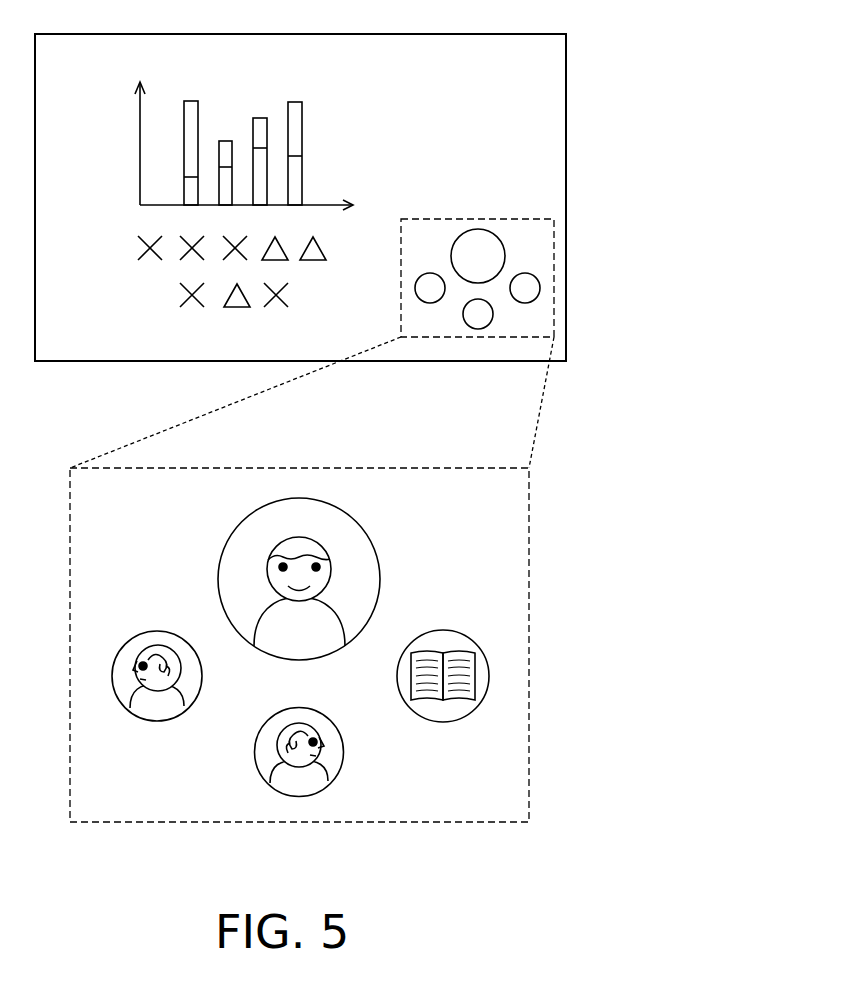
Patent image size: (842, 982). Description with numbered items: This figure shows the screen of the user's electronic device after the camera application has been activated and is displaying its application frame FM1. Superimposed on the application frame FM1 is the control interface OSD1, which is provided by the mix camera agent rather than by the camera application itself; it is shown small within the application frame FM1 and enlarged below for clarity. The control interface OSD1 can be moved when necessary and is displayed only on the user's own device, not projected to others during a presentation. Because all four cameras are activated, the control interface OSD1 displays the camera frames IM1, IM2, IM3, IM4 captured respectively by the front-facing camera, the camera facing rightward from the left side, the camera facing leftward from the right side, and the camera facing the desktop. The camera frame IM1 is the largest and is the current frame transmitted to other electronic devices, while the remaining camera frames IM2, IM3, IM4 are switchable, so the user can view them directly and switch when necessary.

The application frame FM1 is at (495, 34).
The control interface OSD1 is at (514, 219).
The camera frame IM1 is at (368, 537).
The camera frame IM2 is at (158, 631).
The camera frame IM3 is at (337, 778).
The camera frame IM4 is at (441, 722).